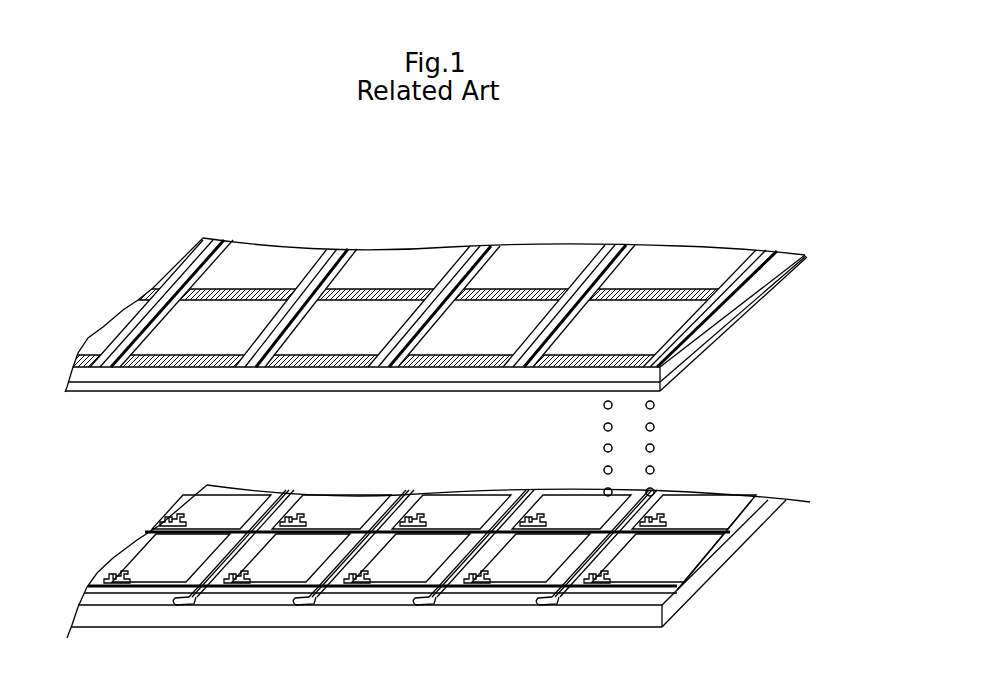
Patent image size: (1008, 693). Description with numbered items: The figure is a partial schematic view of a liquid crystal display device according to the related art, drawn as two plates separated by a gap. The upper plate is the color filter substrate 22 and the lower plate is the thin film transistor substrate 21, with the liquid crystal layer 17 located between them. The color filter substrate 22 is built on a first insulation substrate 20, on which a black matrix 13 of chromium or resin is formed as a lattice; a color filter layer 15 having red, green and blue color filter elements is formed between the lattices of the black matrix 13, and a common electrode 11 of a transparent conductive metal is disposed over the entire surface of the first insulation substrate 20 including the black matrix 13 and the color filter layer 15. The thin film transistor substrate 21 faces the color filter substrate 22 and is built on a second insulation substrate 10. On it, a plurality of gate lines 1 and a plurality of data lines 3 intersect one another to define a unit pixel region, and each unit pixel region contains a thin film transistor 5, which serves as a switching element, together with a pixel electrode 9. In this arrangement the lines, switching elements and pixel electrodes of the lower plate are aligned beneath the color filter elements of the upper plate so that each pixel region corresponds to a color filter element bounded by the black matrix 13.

The gate line 1 is at (668, 592).
The data line 3 is at (550, 604).
The thin film transistor 5 is at (590, 589).
The pixel electrode 9 is at (697, 543).
The second insulation substrate 10 is at (697, 583).
The common electrode 11 is at (750, 303).
The black matrix 13 is at (757, 260).
The color filter layer 15 is at (660, 252).
The liquid crystal layer 17 is at (659, 404).
The first insulation substrate 20 is at (707, 330).
The thin film transistor substrate 21 is at (475, 548).
The color filter substrate 22 is at (472, 280).